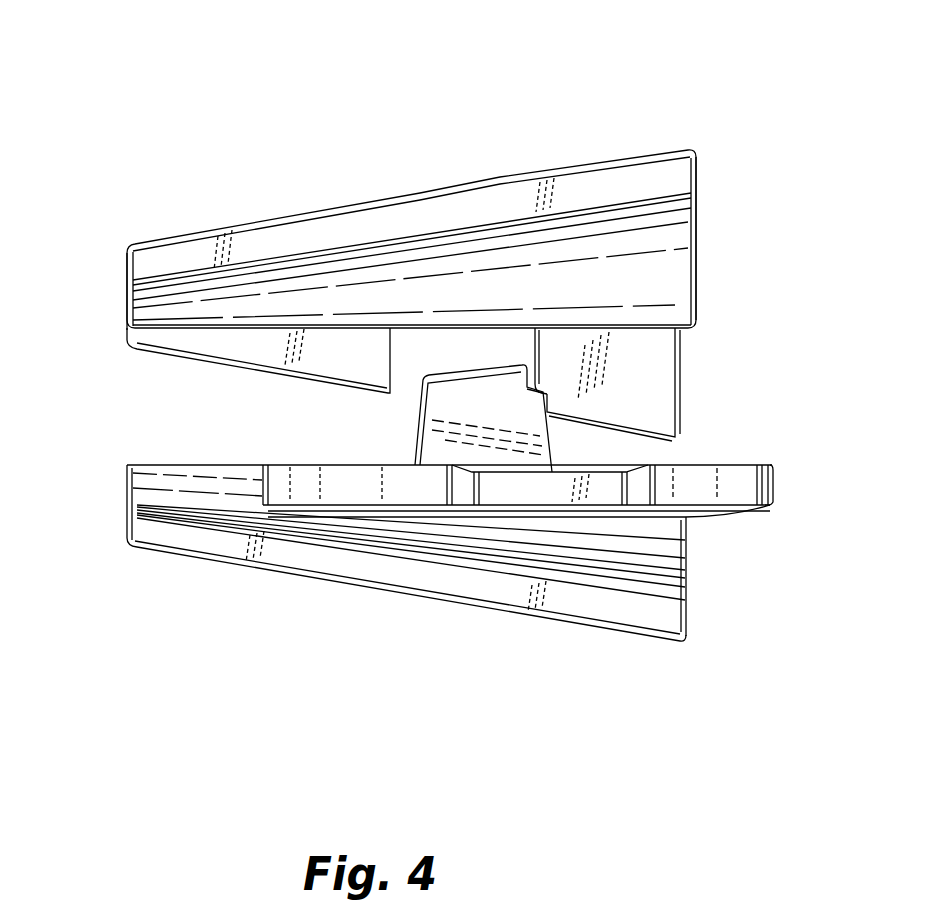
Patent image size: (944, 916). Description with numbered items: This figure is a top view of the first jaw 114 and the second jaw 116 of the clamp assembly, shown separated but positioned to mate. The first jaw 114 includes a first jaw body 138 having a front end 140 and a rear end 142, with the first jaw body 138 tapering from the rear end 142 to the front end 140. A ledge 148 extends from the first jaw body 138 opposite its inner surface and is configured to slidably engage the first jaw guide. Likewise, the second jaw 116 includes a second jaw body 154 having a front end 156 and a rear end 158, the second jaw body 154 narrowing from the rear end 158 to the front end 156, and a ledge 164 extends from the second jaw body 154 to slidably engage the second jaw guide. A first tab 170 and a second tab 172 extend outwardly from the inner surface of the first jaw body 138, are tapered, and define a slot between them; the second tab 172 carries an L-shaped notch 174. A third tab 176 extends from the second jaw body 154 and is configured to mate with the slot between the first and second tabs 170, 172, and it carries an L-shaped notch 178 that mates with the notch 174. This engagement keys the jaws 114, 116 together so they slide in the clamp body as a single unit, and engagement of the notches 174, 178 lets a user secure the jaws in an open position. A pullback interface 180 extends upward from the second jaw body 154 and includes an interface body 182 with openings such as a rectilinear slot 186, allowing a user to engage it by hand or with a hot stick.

The first jaw 114 is at (157, 148).
The second jaw 116 is at (162, 607).
The first jaw body 138 is at (575, 248).
The front end 140 is at (127, 296).
The rear end 142 is at (700, 262).
The ledge 148 is at (393, 223).
The second jaw body 154 is at (448, 528).
The front end 156 is at (127, 500).
The rear end 158 is at (688, 568).
The ledge 164 is at (303, 553).
The first tab 170 is at (214, 345).
The second tab 172 is at (648, 374).
The L-shaped notch 174 is at (543, 388).
The third tab 176 is at (437, 438).
The L-shaped notch 178 is at (537, 394).
The pullback interface 180 is at (773, 504).
The interface body 182 is at (734, 482).
The rectilinear slot 186 is at (562, 490).